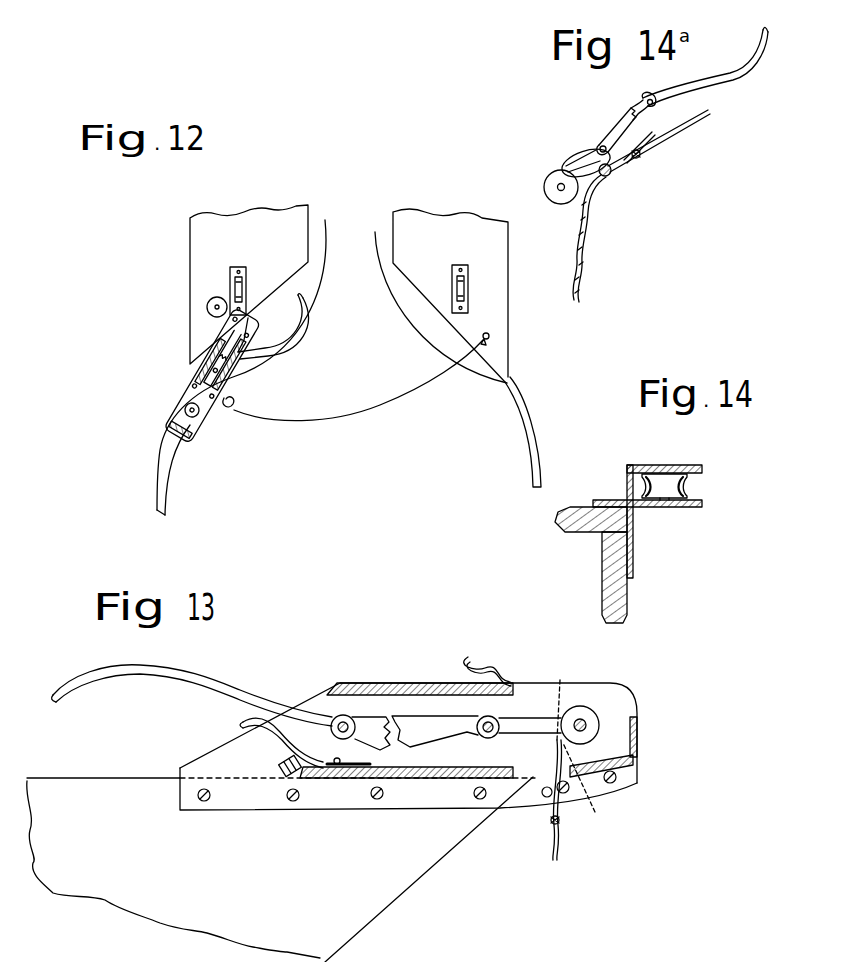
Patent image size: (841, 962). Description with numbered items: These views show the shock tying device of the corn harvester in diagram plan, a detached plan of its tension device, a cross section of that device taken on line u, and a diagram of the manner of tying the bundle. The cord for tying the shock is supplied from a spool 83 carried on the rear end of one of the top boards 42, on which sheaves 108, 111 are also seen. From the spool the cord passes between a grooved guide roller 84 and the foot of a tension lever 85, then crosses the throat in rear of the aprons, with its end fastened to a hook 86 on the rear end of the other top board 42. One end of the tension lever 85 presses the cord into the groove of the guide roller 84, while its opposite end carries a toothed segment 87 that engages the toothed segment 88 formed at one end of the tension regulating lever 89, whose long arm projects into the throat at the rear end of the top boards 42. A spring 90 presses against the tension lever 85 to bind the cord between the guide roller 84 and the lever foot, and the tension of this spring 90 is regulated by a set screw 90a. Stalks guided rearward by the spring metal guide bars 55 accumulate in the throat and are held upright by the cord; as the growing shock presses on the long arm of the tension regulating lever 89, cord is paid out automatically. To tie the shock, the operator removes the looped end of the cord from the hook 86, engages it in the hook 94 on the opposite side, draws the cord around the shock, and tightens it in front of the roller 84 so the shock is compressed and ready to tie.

In FIG. 12, the top plate 42 is at (349, 293).
In FIG. 13, the top plate 42 is at (332, 860).
In FIG. 12, the spring metal guide bars 55 is at (307, 310).
In FIG. 12, the spool 83 is at (207, 307).
In FIG. 12, the grooved guide roller 84 is at (198, 418).
In FIG. 14, the grooved guide roller 84 is at (667, 468).
In FIG. 13, the grooved guide roller 84 is at (600, 718).
In FIG. 12, the tension lever 85 is at (237, 387).
In FIG. 12, the hook 86 is at (490, 337).
In FIG. 12, the toothed segment 87 is at (223, 373).
In FIG. 14A, the toothed segment 87 is at (626, 110).
In FIG. 13, the toothed segment 87 is at (427, 722).
In FIG. 14A, the toothed segment 88 is at (645, 107).
In FIG. 13, the toothed segment 88 is at (367, 725).
In FIG. 12, the tension regulating lever 89 is at (288, 329).
In FIG. 14A, the tension regulating lever 89 is at (757, 68).
In FIG. 13, the tension regulating lever 89 is at (233, 694).
In FIG. 12, the spring 90 is at (245, 338).
In FIG. 13, the spring 90 is at (284, 737).
In FIG. 13, the set screw 90a is at (282, 782).
In FIG. 12, the hook 94 is at (231, 407).
In FIG. 14A, the hook 94 is at (607, 181).
In FIG. 13, the hook 94 is at (510, 650).
In FIG. 12, the sheave 108 is at (247, 290).
In FIG. 12, the sheave 111 is at (466, 290).
In FIG. 13, the section line u is at (576, 761).